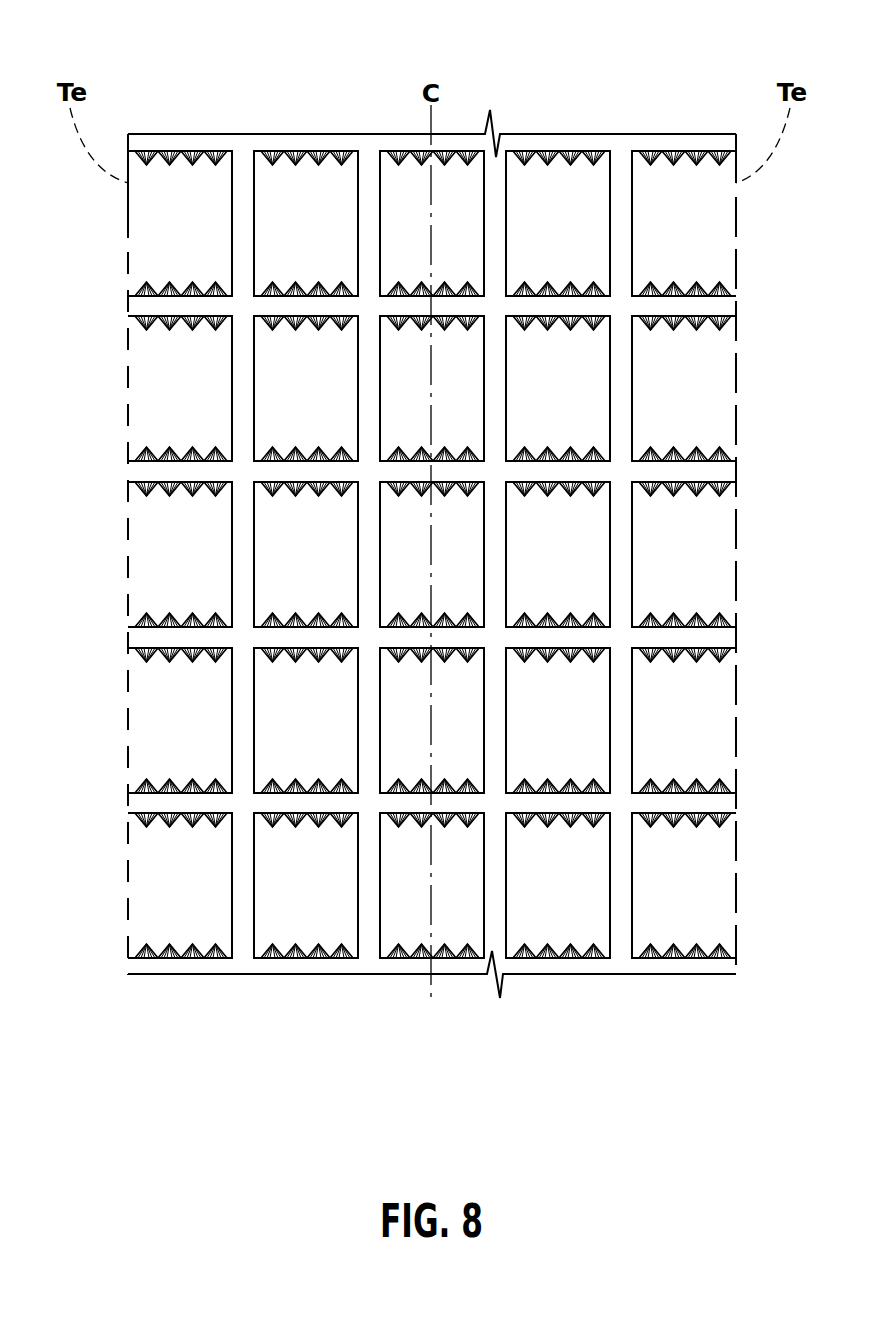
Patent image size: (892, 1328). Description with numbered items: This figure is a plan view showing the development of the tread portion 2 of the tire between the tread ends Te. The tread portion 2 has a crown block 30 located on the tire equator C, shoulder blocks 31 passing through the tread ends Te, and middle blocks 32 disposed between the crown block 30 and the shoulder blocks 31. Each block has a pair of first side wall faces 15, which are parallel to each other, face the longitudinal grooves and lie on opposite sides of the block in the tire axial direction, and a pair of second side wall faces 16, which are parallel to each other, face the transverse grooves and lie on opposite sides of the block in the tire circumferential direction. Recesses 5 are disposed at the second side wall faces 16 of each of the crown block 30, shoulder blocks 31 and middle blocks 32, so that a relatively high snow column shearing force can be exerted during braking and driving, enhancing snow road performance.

The tread portion 2 is at (639, 100).
The recess 5 is at (673, 498).
The first side wall face 15 is at (506, 347).
The second side wall face 16 is at (277, 482).
The crown block 30 is at (392, 800).
The shoulder block 31 is at (473, 602).
The middle block 32 is at (435, 602).